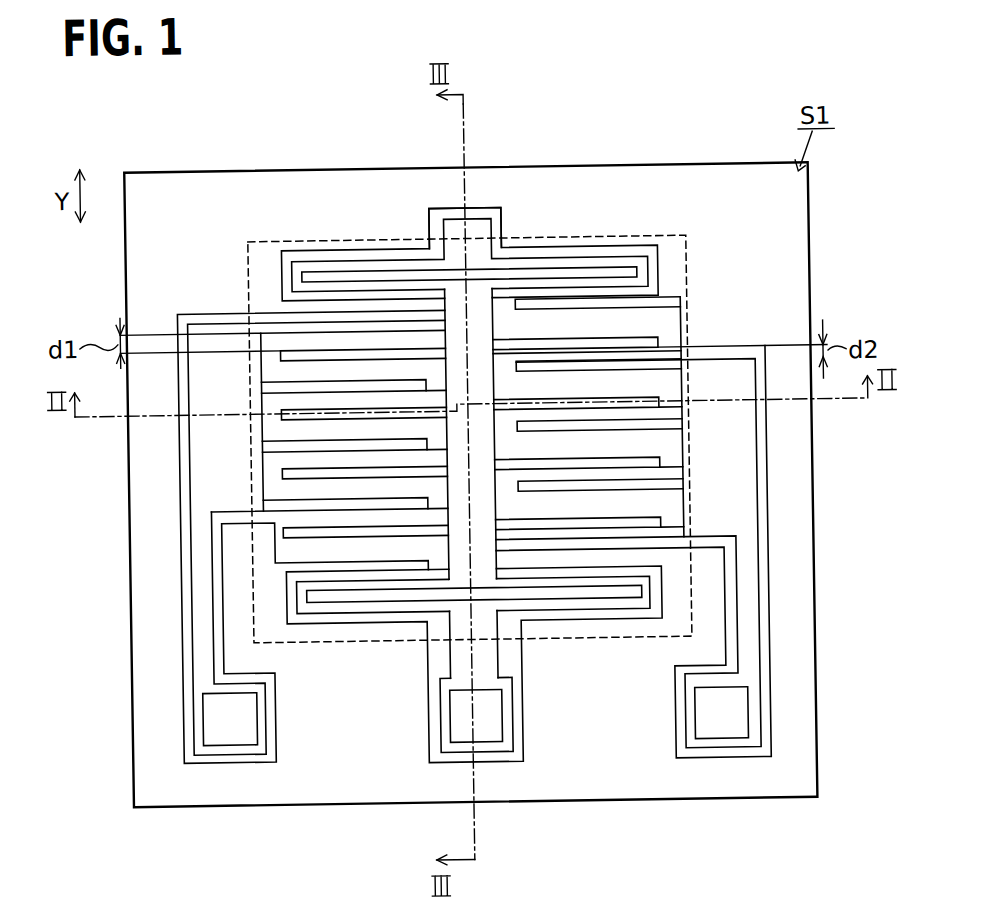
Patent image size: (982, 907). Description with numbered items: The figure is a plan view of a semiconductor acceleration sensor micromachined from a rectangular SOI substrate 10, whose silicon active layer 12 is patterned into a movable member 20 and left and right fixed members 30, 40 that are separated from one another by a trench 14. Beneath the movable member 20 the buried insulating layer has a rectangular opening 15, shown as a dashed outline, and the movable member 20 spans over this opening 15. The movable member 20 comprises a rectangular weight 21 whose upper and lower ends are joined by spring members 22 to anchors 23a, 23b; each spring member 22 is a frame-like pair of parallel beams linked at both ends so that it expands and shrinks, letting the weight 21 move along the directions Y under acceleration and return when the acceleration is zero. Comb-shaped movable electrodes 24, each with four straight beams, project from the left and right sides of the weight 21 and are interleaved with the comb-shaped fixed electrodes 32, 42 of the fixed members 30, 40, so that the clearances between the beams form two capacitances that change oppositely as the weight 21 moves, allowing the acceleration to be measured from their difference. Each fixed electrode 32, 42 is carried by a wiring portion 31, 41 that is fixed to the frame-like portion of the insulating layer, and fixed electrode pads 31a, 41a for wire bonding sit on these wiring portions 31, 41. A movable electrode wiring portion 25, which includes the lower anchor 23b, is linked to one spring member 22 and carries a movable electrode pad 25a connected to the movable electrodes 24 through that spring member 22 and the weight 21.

The SOI substrate 10 is at (471, 461).
The silicon active layer 12 is at (696, 172).
The trench 14 is at (441, 206).
The opening 15 is at (294, 238).
The movable member 20 is at (467, 483).
The weight 21 is at (484, 437).
The spring member 22 is at (576, 264).
The anchor 23a is at (484, 230).
The anchor 23b is at (460, 655).
The movable electrode 24 is at (615, 345).
The movable electrode wiring portion 25 is at (504, 710).
The movable electrode pad 25a is at (484, 724).
The fixed member 30 is at (265, 579).
The wiring portion 31 is at (226, 454).
The fixed electrode pad 31a is at (224, 716).
The fixed electrode 32 is at (346, 505).
The fixed member 40 is at (676, 572).
The wiring portion 41 is at (720, 459).
The fixed electrode pad 41a is at (724, 719).
The fixed electrode 42 is at (615, 366).